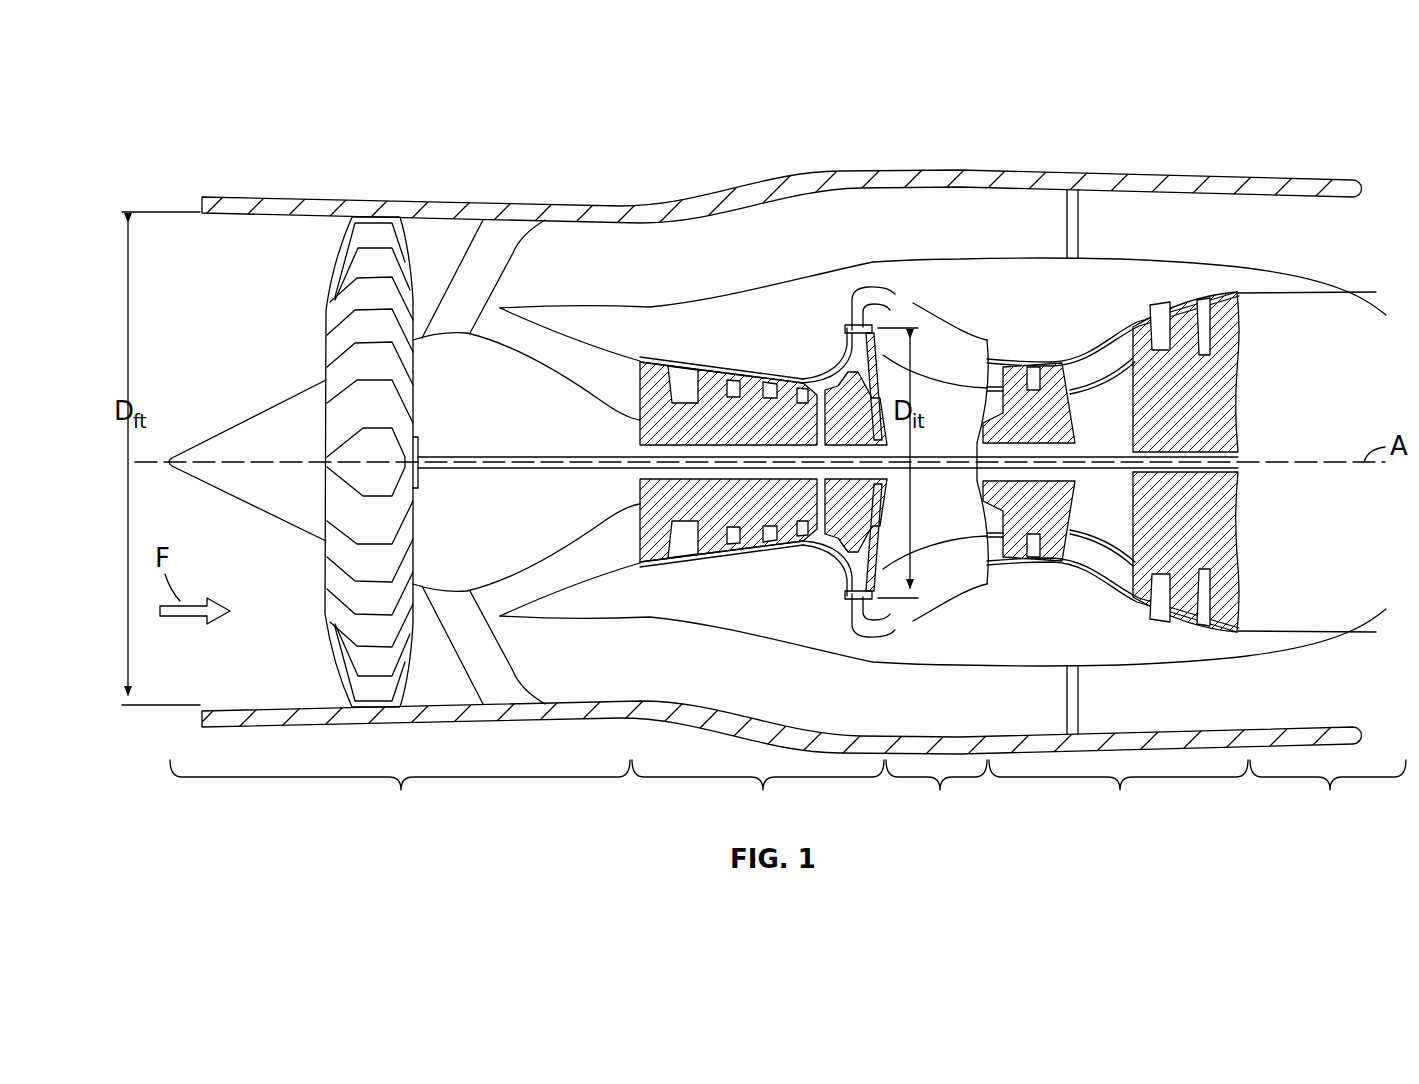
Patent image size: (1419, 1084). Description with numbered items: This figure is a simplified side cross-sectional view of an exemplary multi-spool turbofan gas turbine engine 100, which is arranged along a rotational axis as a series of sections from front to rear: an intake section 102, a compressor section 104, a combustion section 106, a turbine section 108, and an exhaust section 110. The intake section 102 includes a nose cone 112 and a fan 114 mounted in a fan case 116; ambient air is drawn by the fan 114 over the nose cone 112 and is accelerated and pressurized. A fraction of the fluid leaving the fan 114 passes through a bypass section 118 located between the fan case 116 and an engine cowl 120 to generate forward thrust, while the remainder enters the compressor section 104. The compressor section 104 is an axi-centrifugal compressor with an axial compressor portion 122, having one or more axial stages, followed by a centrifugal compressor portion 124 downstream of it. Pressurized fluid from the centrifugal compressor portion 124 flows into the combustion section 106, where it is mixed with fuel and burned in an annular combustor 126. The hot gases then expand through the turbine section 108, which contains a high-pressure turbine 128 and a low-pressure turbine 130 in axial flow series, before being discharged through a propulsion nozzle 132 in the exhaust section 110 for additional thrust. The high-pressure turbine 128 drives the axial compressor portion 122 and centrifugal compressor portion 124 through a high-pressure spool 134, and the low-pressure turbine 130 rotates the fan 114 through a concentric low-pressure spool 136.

The gas turbine engine 100 is at (519, 185).
The intake section 102 is at (400, 792).
The compressor section 104 is at (758, 792).
The combustion section 106 is at (936, 792).
The turbine section 108 is at (1118, 792).
The exhaust section 110 is at (1328, 792).
The nose cone 112 is at (273, 426).
The fan 114 is at (336, 326).
The fan case 116 is at (318, 201).
The bypass section 118 is at (642, 262).
The engine cowl 120 is at (575, 304).
The axial compressor portion 122 is at (716, 367).
The centrifugal compressor portion 124 is at (833, 352).
The annular combustor 126 is at (1061, 462).
The high-pressure turbine 128 is at (1012, 333).
The low-pressure turbine 130 is at (1153, 297).
The propulsion nozzle 132 is at (1312, 462).
The high-pressure spool 134 is at (1057, 490).
The low-pressure spool 136 is at (548, 470).